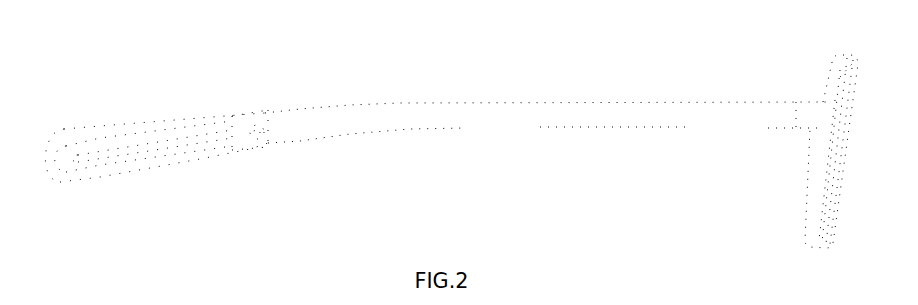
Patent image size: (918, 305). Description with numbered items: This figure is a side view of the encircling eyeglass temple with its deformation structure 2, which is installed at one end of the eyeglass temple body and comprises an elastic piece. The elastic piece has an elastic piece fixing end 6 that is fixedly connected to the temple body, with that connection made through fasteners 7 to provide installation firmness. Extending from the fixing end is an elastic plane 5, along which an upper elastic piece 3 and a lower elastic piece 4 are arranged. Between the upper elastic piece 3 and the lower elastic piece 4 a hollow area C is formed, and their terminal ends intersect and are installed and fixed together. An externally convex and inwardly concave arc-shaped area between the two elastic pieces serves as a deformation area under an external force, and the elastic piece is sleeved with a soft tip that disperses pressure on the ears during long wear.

The deformation structure 2 is at (688, 102).
The upper elastic piece 3 is at (138, 124).
The hollow area C is at (157, 150).
The lower elastic piece 4 is at (160, 142).
The elastic plane 5 is at (228, 150).
The elastic piece fixing end 6 is at (256, 118).
The fasteners 7 is at (275, 143).